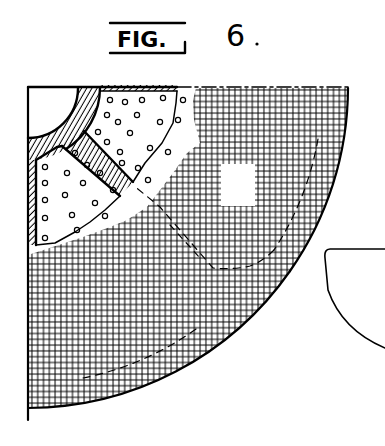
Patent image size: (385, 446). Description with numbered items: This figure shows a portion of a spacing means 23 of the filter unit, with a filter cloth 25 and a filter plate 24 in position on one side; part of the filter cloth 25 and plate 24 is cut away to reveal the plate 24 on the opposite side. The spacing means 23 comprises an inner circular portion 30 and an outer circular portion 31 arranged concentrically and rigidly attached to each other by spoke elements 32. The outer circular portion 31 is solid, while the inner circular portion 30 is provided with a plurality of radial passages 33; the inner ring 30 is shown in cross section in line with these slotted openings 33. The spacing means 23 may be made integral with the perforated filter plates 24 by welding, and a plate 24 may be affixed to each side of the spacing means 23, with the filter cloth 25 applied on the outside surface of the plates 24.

The spacing means 23 is at (247, 198).
The filter plate 24 is at (152, 110).
The filter cloth 25 is at (285, 110).
The inner circular portion 30 is at (94, 87).
The outer circular portion 31 is at (337, 165).
The spoke element 32 is at (172, 336).
The radial passage 33 is at (73, 100).